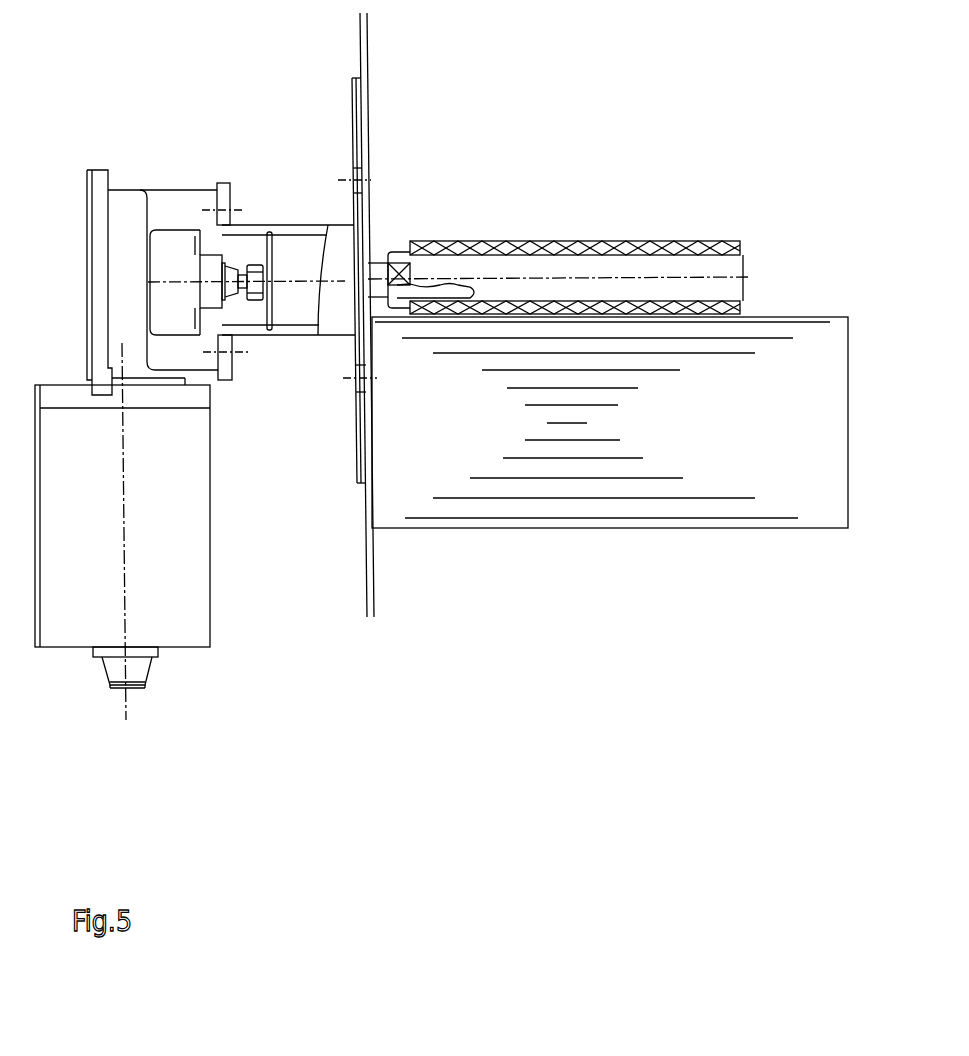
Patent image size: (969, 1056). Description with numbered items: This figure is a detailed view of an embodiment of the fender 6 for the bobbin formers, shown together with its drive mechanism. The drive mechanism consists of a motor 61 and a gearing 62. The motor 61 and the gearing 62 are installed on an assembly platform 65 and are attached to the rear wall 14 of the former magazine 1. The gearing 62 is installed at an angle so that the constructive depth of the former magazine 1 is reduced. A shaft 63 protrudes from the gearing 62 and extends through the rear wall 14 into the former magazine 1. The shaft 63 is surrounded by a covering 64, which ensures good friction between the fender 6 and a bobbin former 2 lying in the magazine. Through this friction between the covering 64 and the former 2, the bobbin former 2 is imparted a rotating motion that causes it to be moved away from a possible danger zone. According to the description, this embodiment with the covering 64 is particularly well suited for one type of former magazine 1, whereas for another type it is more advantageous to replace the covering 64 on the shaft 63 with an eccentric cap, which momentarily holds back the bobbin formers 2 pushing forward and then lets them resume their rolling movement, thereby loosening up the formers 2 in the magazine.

The former magazine 1 is at (547, 215).
The bobbin former 2 is at (587, 425).
The fender 6 is at (268, 372).
The rear wall 14 is at (363, 47).
The motor 61 is at (177, 530).
The gearing 62 is at (122, 247).
The shaft 63 is at (510, 270).
The covering 64 is at (598, 240).
The assembly platform 65 is at (357, 142).